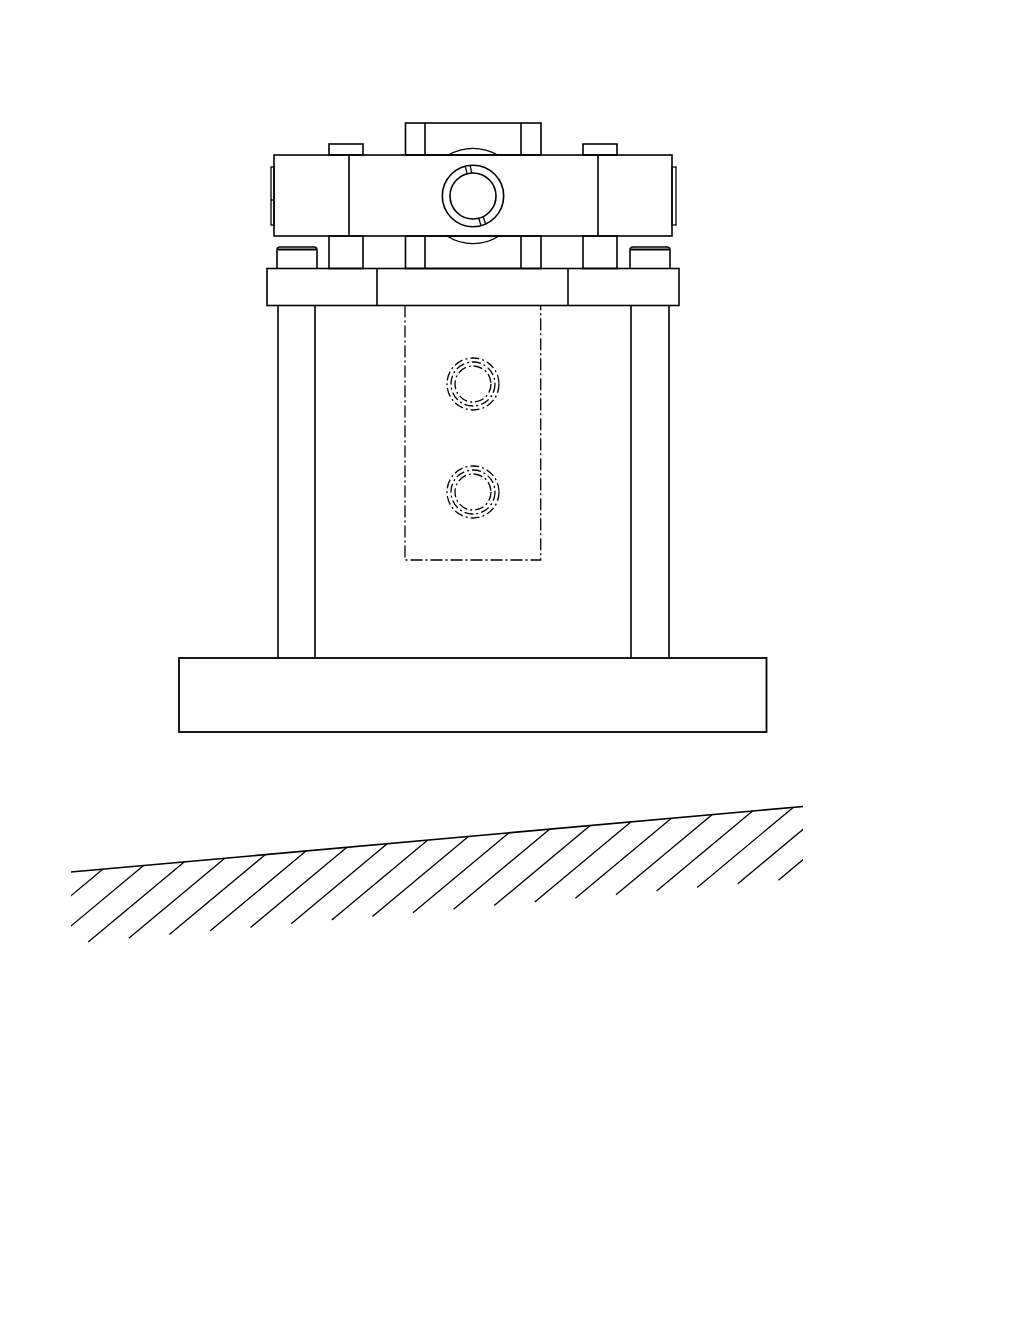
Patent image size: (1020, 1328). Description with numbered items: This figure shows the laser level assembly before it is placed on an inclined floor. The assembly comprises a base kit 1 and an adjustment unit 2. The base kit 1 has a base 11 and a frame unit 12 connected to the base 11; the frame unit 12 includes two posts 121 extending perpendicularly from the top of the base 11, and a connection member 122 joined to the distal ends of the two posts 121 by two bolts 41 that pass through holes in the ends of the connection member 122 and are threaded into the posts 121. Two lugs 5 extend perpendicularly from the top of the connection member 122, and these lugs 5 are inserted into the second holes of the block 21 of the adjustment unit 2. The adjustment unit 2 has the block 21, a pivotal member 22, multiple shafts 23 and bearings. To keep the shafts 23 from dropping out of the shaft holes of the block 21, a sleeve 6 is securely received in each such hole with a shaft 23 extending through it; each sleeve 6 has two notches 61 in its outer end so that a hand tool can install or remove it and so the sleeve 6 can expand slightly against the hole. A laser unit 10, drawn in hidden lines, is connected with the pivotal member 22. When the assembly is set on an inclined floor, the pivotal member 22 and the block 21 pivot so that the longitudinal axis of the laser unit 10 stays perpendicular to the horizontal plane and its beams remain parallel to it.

The base kit 1 is at (122, 387).
The base 11 is at (209, 671).
The frame unit 12 is at (180, 320).
The post 121 is at (290, 387).
The connection member 122 is at (280, 294).
The adjustment unit 2 is at (302, 120).
The block 21 is at (650, 170).
The pivotal member 22 is at (531, 126).
The shaft 23 is at (481, 183).
The lug 5 is at (600, 146).
The sleeve 6 is at (450, 192).
The notch 61 is at (466, 168).
The bolt 41 is at (282, 258).
The laser unit 10 is at (493, 561).